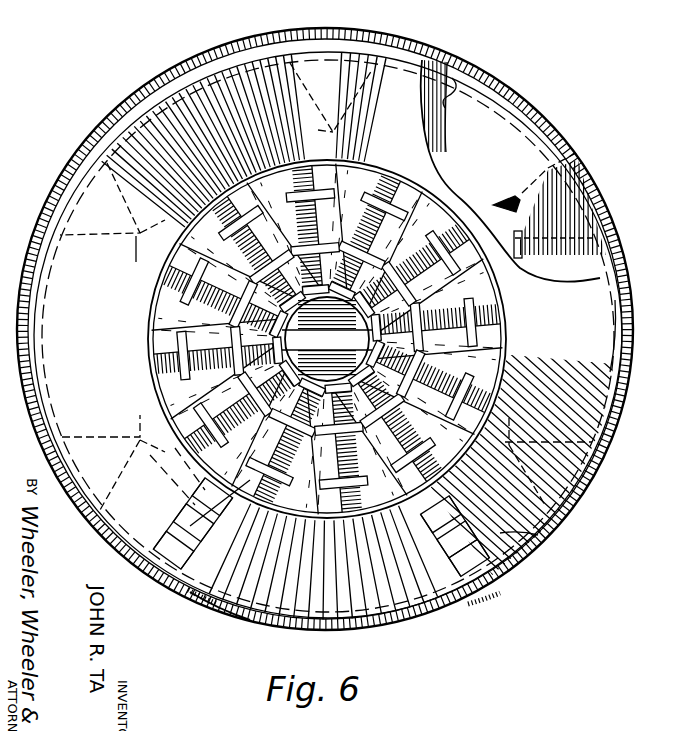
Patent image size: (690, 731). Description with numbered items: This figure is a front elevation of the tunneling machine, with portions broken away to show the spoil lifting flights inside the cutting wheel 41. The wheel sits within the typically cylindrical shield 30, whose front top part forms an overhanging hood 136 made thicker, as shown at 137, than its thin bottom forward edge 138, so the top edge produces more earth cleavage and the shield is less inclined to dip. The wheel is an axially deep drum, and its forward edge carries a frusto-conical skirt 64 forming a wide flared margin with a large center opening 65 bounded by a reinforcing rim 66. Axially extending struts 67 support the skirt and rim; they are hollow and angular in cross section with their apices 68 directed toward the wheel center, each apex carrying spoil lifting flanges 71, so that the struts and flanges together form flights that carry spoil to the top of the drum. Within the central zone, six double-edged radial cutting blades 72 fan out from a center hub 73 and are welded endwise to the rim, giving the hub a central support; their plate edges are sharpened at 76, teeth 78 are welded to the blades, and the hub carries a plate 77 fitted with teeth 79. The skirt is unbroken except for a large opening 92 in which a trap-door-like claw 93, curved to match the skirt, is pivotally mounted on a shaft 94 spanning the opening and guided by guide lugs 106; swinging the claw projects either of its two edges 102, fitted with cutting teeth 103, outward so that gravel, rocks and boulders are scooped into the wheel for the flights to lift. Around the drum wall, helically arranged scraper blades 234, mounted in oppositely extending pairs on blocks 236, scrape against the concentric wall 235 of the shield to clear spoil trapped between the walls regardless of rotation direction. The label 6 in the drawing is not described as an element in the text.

The section line 6 is at (538, 535).
The shield 30 is at (578, 157).
The cutting wheel 41 is at (590, 362).
The frusto-conical skirt 64 is at (565, 408).
The center opening 65 is at (495, 333).
The reinforcing rim 66 is at (505, 351).
The spoil lifting struts 67 is at (348, 123).
The apices 68 is at (512, 215).
The spoil lifting flanges 71 is at (512, 230).
The radial cutting blades 72 is at (330, 190).
The center hub 73 is at (327, 340).
The cutting edges 76 is at (378, 205).
The plate 77 is at (327, 343).
The teeth 78 is at (365, 207).
The teeth 79 is at (300, 298).
The opening 92 is at (190, 526).
The claw 93 is at (253, 582).
The shaft 94 is at (353, 631).
The edges 102 is at (200, 498).
The cutting teeth 103 is at (190, 567).
The guide lugs 106 is at (195, 592).
The hood 136 is at (463, 63).
The thickened portion 137 is at (400, 50).
The bottom forward edge 138 is at (315, 632).
The scraper blades 234 is at (486, 105).
The concentric wall 235 is at (508, 123).
The blocks 236 is at (473, 110).